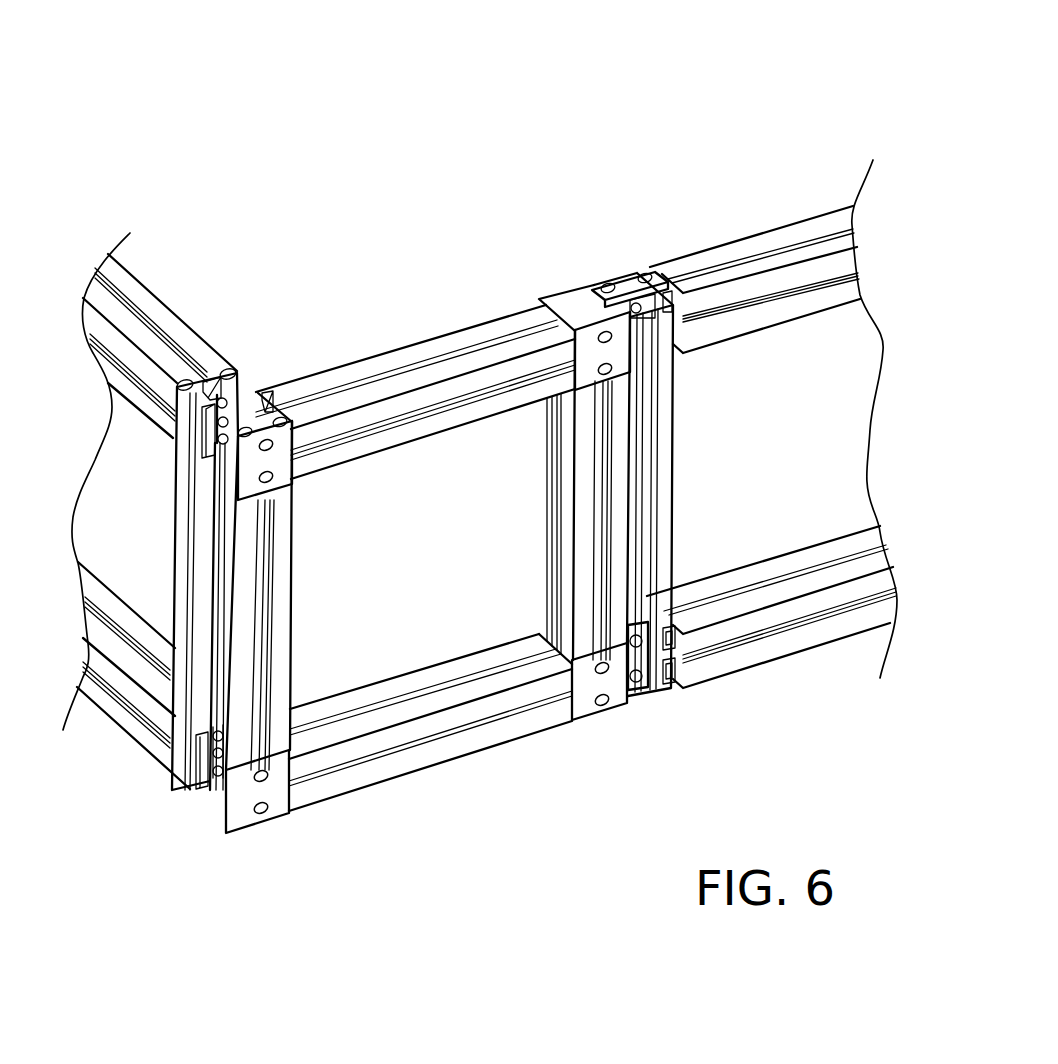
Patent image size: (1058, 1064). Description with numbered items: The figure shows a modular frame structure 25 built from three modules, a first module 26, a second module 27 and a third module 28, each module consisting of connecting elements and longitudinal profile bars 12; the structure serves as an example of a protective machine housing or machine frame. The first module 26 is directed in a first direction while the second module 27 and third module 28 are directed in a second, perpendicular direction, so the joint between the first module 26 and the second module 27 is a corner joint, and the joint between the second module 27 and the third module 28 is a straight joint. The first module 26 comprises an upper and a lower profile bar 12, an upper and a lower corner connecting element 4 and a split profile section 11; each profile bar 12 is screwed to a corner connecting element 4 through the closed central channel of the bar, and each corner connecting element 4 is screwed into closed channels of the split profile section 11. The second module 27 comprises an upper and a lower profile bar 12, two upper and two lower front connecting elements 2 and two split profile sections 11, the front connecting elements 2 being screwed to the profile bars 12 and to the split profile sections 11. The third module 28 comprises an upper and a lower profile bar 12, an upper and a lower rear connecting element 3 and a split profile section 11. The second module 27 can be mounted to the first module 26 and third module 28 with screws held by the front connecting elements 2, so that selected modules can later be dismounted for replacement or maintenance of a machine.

The front connecting element 2 is at (270, 394).
The rear connecting element 3 is at (626, 284).
The corner connecting element 4 is at (207, 376).
The split profile section 11 is at (179, 569).
The profile bar 12 is at (153, 308).
The modular frame structure 25 is at (531, 107).
The first module 26 is at (226, 228).
The second module 27 is at (414, 238).
The third module 28 is at (741, 145).